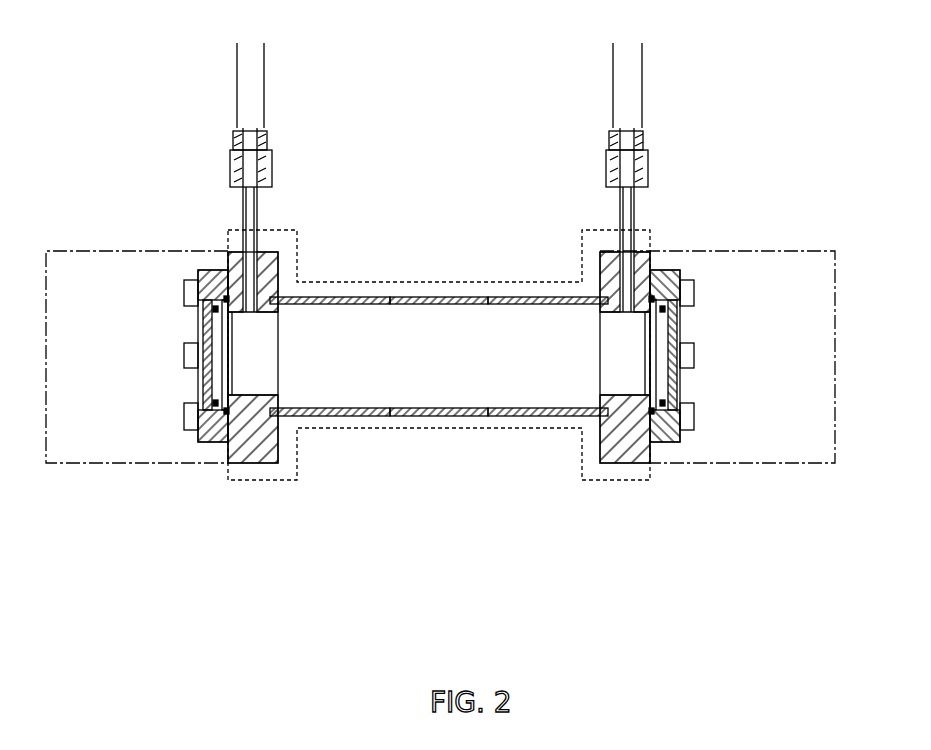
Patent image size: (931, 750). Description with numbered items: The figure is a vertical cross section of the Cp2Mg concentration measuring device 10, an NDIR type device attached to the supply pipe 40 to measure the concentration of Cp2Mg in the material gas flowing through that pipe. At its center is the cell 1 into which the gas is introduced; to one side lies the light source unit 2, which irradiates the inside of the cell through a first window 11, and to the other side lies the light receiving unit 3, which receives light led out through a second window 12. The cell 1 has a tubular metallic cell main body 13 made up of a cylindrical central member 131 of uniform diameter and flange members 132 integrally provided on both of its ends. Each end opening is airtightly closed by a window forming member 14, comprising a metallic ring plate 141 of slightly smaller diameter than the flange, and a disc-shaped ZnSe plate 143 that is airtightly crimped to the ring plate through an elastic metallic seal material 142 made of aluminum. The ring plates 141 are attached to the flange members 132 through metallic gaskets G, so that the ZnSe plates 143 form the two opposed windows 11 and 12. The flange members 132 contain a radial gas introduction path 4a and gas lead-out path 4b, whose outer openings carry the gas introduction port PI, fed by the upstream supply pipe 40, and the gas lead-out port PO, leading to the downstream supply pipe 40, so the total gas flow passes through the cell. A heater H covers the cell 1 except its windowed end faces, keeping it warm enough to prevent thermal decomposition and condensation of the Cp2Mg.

The cell 1 is at (540, 237).
The light source unit 2 is at (110, 250).
The light receiving unit 3 is at (757, 251).
The Cp2Mg concentration measuring device 10 is at (438, 294).
The supply pipe 40 is at (264, 95).
The gas introduction port PI is at (232, 162).
The gas lead-out port PO is at (648, 162).
The heater H is at (452, 281).
The metallic gasket G is at (200, 292).
The gas introduction path 4a is at (247, 265).
The gas lead-out path 4b is at (632, 266).
The first window 11 is at (195, 340).
The second window 12 is at (683, 333).
The cell main body 13 is at (439, 404).
The central member 131 is at (439, 381).
The flange member 132 is at (439, 381).
The window forming member 14 is at (190, 443).
The metallic ring plate 141 is at (213, 442).
The elastic metallic seal material 142 is at (222, 392).
The ZnSe plate 143 is at (205, 390).